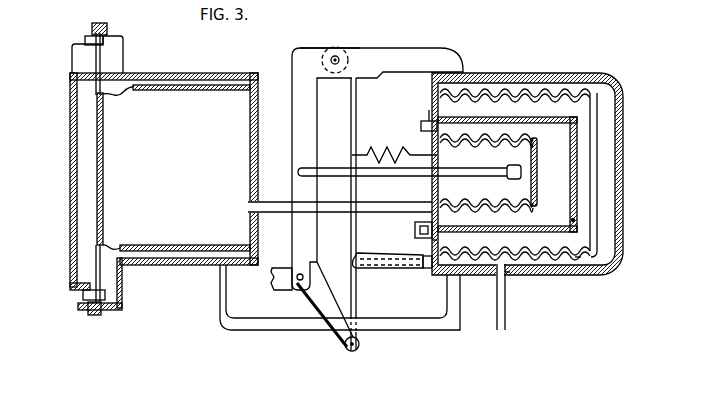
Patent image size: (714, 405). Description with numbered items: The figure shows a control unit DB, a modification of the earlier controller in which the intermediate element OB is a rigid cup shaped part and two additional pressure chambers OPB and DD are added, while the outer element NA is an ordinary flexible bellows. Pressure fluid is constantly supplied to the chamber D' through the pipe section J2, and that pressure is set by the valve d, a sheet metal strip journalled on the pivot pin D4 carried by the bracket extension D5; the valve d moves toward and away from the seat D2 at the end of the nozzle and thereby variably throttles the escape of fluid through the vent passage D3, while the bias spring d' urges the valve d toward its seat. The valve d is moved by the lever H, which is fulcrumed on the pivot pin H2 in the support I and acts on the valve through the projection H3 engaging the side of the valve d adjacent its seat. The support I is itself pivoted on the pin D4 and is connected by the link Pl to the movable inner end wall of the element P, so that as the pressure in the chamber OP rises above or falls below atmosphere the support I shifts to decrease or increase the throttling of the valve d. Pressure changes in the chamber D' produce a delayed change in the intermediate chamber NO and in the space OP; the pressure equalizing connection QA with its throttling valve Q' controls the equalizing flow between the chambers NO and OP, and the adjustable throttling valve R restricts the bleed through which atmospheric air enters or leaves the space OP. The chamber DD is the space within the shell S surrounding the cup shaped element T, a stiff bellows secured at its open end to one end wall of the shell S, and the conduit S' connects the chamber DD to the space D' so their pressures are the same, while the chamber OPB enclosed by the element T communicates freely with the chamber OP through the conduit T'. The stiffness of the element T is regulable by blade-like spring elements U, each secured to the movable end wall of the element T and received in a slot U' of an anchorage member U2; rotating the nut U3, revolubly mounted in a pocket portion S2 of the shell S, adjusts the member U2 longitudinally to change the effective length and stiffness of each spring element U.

The pressure chamber DD is at (83, 120).
The cup shaped element T is at (189, 154).
The pressure chamber OPB is at (161, 177).
The blade-like spring element U is at (79, 170).
The longitudinally extending slot U' is at (66, 167).
The nut U3 is at (85, 41).
The adjustable spring anchorage member U2 is at (92, 30).
The pocket portion S2 is at (125, 40).
The shell S is at (189, 281).
The pipe or conduit S' is at (340, 313).
The support I is at (300, 68).
The pivot pin D4 is at (336, 58).
The bracket extension D5 is at (412, 55).
The valve d is at (339, 223).
The bias spring d' is at (394, 140).
The link Pl is at (332, 168).
The pipe or conduit T' is at (340, 195).
The adjustable throttling valve R is at (430, 118).
The throttling valve Q' is at (411, 230).
The pressure equalizing connection QA is at (415, 244).
The seat D2 is at (358, 271).
The bleeder or vent passage D3 is at (426, 268).
The lever H is at (324, 297).
The pivot pin H2 is at (292, 288).
The projection H3 is at (358, 343).
The control unit DB is at (655, 150).
The pipe section J2 is at (505, 308).
The chamber space OP is at (559, 134).
The element P is at (538, 147).
The chamber NO is at (583, 240).
The element OB is at (573, 220).
The chamber D' is at (544, 258).
The element NA is at (578, 257).